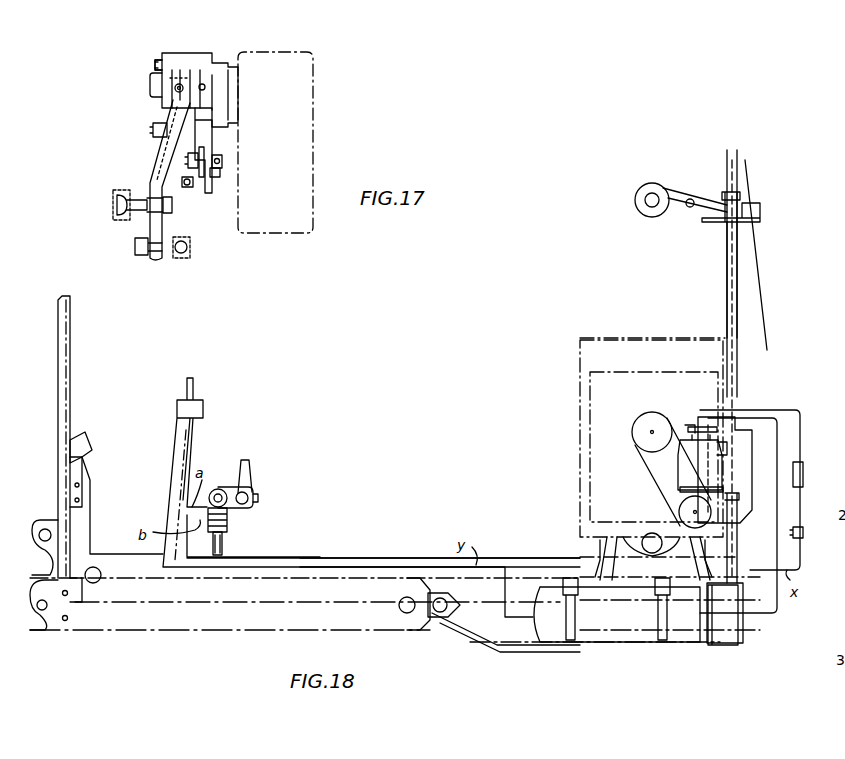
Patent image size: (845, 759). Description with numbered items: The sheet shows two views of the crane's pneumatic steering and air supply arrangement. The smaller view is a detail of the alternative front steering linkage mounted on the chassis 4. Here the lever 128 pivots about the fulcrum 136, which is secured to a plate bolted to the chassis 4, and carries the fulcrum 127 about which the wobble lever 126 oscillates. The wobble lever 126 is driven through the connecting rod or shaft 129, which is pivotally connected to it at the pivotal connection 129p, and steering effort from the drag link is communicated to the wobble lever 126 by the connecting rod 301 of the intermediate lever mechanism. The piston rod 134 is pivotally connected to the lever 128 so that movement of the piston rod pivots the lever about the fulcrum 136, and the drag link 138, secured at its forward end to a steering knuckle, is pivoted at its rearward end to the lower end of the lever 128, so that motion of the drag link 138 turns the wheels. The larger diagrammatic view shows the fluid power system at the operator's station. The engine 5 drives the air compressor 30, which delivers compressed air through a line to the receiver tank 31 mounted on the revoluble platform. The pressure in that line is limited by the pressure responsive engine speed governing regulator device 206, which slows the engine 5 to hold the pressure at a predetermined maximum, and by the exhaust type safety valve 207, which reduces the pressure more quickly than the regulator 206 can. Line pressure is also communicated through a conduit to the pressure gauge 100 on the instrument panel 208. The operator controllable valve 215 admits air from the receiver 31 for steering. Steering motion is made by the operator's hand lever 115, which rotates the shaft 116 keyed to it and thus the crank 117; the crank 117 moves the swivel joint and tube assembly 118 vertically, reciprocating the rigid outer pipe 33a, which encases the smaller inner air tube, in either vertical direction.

In FIG. 17, the chassis 4 is at (312, 92).
In FIG. 17, the fulcrum 136 is at (145, 78).
In FIG. 17, the lever 128 is at (158, 170).
In FIG. 17, the fulcrum 127 is at (210, 137).
In FIG. 17, the wobble lever 126 is at (205, 152).
In FIG. 17, the pivotal connection 129p is at (222, 163).
In FIG. 17, the connecting rod or shaft 129 is at (222, 173).
In FIG. 17, the connecting rod 301 is at (188, 192).
In FIG. 17, the piston rod 134 is at (122, 223).
In FIG. 17, the drag link 138 is at (183, 260).
In FIG. 18, the instrument panel 208 is at (66, 403).
In FIG. 18, the pressure gauge 100 is at (85, 437).
In FIG. 18, the operator controllable valve 215 is at (195, 390).
In FIG. 18, the crank 117 is at (227, 490).
In FIG. 18, the shaft 116 is at (258, 494).
In FIG. 18, the hand lever 115 is at (250, 470).
In FIG. 18, the swivel joint and tube assembly 118 is at (227, 524).
In FIG. 18, the rigid outer pipe 33a is at (222, 539).
In FIG. 18, the receiver tank 31 is at (613, 632).
In FIG. 18, the engine 5 is at (660, 382).
In FIG. 18, the air compressor 30 is at (731, 486).
In FIG. 18, the pressure responsive engine speed governing regulator device 206 is at (803, 472).
In FIG. 18, the exhaust type safety valve 207 is at (804, 533).